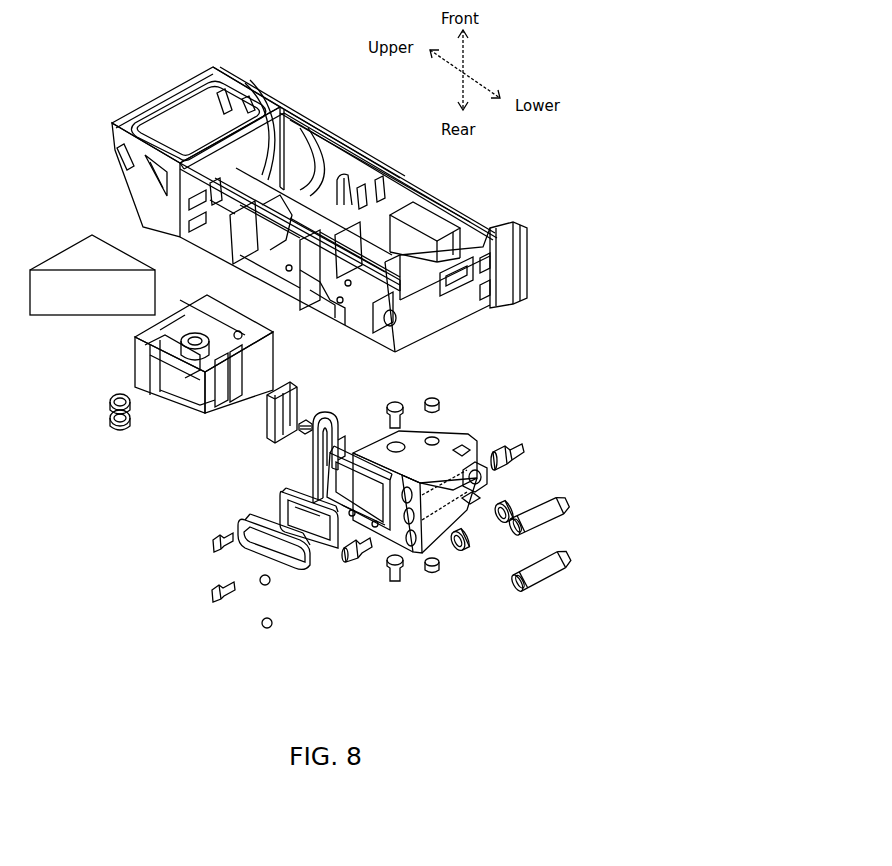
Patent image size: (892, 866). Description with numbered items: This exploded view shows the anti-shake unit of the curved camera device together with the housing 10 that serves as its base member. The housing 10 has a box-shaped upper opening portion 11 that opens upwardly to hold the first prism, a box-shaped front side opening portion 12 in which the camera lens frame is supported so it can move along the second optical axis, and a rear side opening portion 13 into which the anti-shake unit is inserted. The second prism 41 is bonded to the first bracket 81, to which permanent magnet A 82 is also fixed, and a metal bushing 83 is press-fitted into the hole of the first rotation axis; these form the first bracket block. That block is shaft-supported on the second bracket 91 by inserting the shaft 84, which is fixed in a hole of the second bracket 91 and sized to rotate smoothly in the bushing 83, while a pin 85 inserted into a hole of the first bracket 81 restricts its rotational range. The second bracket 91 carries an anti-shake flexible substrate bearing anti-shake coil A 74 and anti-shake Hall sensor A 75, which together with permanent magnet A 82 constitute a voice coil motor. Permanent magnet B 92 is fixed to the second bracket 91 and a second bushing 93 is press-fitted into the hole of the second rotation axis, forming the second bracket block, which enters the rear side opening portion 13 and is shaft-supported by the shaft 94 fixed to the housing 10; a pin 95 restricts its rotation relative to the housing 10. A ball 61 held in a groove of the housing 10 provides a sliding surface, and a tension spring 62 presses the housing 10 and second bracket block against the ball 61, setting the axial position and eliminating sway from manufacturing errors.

The housing 10 is at (313, 200).
The box-shaped upper opening portion 11 is at (175, 128).
The box-shaped front side opening portion 12 is at (292, 153).
The rear side opening portion 13 is at (470, 217).
The second prism 41 is at (85, 258).
The ball 61 is at (268, 584).
The tension spring 62 is at (535, 518).
The anti-shake coil A 74 is at (337, 420).
The anti-shake Hall sensor A 75 is at (300, 433).
The first bracket 81 is at (193, 388).
The permanent magnet A 82 is at (268, 428).
The bushing 83 is at (110, 407).
The shaft 84 is at (400, 407).
The pin 85 is at (440, 405).
The second bracket 91 is at (447, 442).
The permanent magnet B 92 is at (280, 503).
The bushing 93 is at (510, 503).
The shaft 94 is at (525, 452).
The pin 95 is at (215, 542).